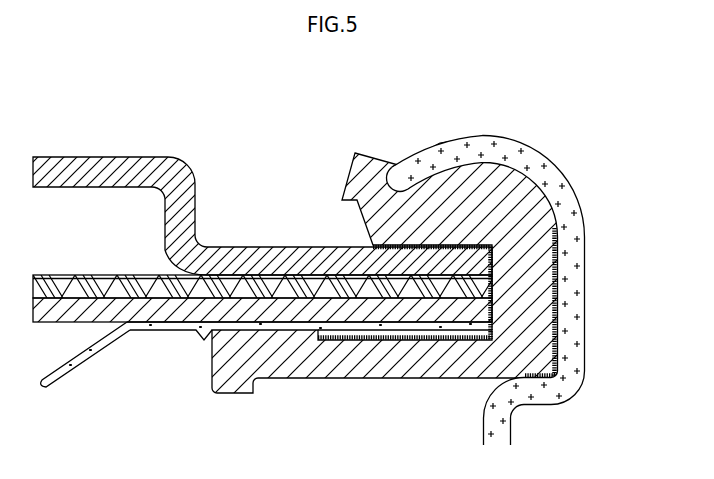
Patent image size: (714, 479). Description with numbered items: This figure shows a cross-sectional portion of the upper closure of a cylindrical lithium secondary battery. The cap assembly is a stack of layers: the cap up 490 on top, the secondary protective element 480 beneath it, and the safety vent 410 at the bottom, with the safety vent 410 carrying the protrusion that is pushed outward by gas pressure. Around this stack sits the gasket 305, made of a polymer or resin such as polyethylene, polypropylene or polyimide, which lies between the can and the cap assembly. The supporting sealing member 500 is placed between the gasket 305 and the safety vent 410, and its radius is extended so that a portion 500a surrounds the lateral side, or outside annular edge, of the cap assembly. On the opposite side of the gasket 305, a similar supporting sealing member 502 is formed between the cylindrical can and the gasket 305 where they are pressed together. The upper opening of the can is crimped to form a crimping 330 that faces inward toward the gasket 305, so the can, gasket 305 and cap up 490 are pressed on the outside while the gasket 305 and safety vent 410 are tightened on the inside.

The cap up 490 is at (101, 171).
The secondary protective element 480 is at (494, 282).
The safety vent 410 is at (497, 325).
The supporting sealing member 500 is at (410, 340).
The portion 500a is at (498, 256).
The supporting sealing member 502 is at (497, 255).
The gasket 305 is at (545, 223).
The crimping 330 is at (568, 186).